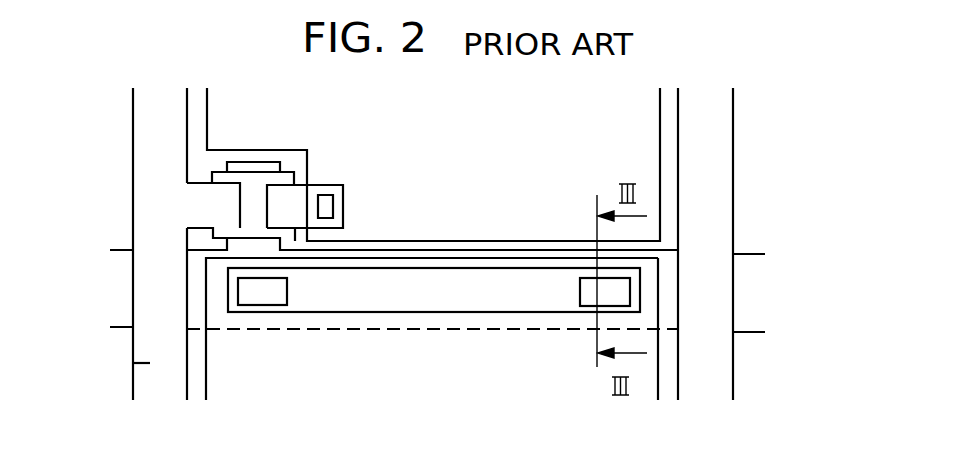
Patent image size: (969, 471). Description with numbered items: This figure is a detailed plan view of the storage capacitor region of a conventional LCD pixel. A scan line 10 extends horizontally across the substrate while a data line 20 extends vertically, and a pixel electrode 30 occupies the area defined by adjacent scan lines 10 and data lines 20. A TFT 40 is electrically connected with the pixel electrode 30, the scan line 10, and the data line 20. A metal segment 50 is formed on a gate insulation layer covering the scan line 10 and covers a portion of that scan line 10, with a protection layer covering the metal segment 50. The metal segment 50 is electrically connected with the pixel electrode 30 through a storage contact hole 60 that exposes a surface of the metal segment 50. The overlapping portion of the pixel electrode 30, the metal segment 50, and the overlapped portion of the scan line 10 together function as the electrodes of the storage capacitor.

The scan line 10 is at (123, 268).
The data line 20 is at (150, 363).
The pixel electrode 30 is at (443, 197).
The TFT 40 is at (248, 203).
The metal segment 50 is at (377, 292).
The storage contact hole 60 is at (257, 293).